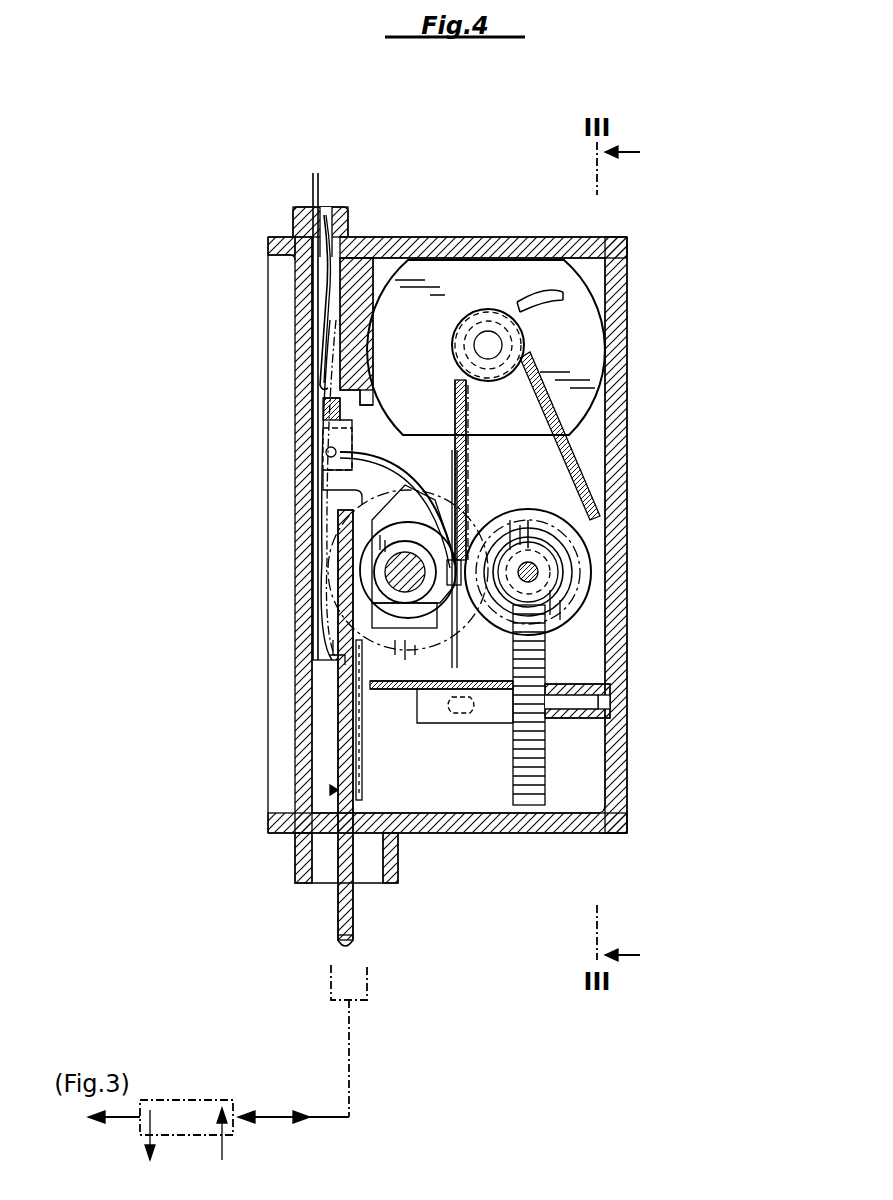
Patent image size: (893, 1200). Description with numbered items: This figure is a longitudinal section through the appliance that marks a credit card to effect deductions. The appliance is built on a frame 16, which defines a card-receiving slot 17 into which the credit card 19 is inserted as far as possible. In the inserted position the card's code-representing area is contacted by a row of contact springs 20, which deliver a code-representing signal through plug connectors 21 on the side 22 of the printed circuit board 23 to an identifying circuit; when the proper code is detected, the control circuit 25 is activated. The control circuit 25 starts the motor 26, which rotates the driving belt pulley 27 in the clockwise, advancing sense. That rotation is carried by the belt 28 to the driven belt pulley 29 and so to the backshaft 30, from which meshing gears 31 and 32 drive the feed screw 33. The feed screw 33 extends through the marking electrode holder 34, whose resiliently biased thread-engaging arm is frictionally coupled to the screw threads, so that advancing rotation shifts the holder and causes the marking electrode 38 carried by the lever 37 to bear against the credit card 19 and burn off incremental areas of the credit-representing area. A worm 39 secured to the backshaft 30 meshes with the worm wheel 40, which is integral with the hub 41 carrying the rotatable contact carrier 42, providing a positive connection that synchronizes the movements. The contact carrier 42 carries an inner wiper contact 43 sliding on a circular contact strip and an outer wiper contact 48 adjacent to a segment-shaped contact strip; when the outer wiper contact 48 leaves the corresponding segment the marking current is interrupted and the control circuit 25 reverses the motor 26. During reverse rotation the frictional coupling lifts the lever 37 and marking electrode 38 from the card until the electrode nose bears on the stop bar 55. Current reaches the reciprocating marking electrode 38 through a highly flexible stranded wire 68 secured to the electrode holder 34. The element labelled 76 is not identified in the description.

The frame 16 is at (488, 840).
The card-receiving slot 17 is at (329, 222).
The credit card 19 is at (313, 183).
The contact springs 20 is at (330, 326).
The plug connectors 21 is at (353, 943).
The side of the printed circuit board 22 is at (338, 744).
The printed circuit board 23 is at (335, 707).
The control circuit 25 is at (190, 1105).
The motor 26 is at (453, 275).
The driving belt pulley 27 is at (470, 342).
The belt 28 is at (462, 462).
The driven belt pulley 29 is at (590, 545).
The backshaft 30 is at (537, 572).
The gear 31 is at (562, 576).
The gear 32 is at (420, 692).
The feed screw 33 is at (405, 553).
The marking electrode holder 34 is at (428, 505).
The lever 37 is at (330, 434).
The marking electrode 38 is at (326, 452).
The worm 39 is at (533, 560).
The worm wheel 40 is at (540, 668).
The hub 41 is at (455, 716).
The contact carrier 42 is at (362, 778).
The inner wiper contact 43 is at (345, 660).
The outer wiper contact 48 is at (330, 790).
The stop bar 55 is at (373, 408).
The highly flexible stranded wire 68 is at (452, 470).
The bracket tab 76 is at (330, 404).